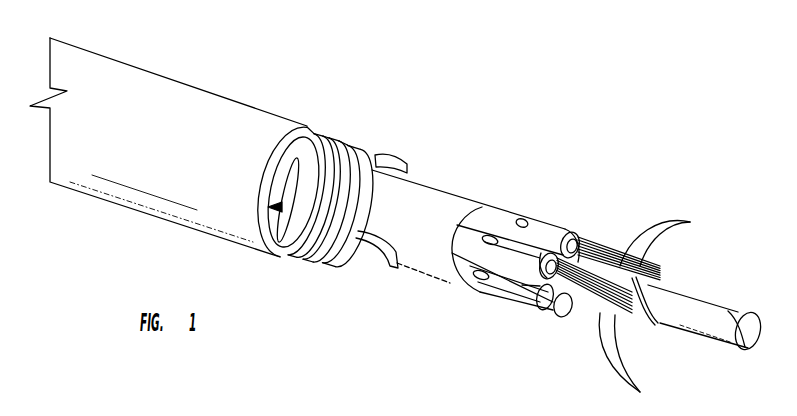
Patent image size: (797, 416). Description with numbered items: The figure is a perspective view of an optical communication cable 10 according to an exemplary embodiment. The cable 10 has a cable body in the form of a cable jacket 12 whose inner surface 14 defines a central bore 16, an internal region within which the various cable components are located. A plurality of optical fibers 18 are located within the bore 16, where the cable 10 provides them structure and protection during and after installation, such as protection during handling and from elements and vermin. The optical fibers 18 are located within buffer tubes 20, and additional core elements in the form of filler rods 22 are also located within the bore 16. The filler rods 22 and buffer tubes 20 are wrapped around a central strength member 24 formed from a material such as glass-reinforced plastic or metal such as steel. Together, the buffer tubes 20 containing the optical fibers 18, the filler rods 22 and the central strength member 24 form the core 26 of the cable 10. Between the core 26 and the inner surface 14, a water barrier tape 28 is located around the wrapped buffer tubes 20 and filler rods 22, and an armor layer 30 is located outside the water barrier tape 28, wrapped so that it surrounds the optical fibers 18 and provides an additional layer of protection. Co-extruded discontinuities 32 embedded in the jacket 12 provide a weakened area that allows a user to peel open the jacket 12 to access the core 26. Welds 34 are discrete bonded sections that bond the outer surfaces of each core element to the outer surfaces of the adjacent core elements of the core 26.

The cable 10 is at (434, 74).
The cable jacket 12 is at (216, 104).
The inner surface 14 is at (285, 246).
The central bore 16 is at (275, 198).
The optical fibers 18 is at (655, 308).
The buffer tubes 20 is at (540, 248).
The filler rods 22 is at (538, 298).
The central strength member 24 is at (753, 326).
The core 26 is at (610, 211).
The water barrier tape 28 is at (432, 197).
The armor layer 30 is at (354, 152).
The co-extruded discontinuities 32 is at (308, 126).
The welds 34 is at (486, 236).